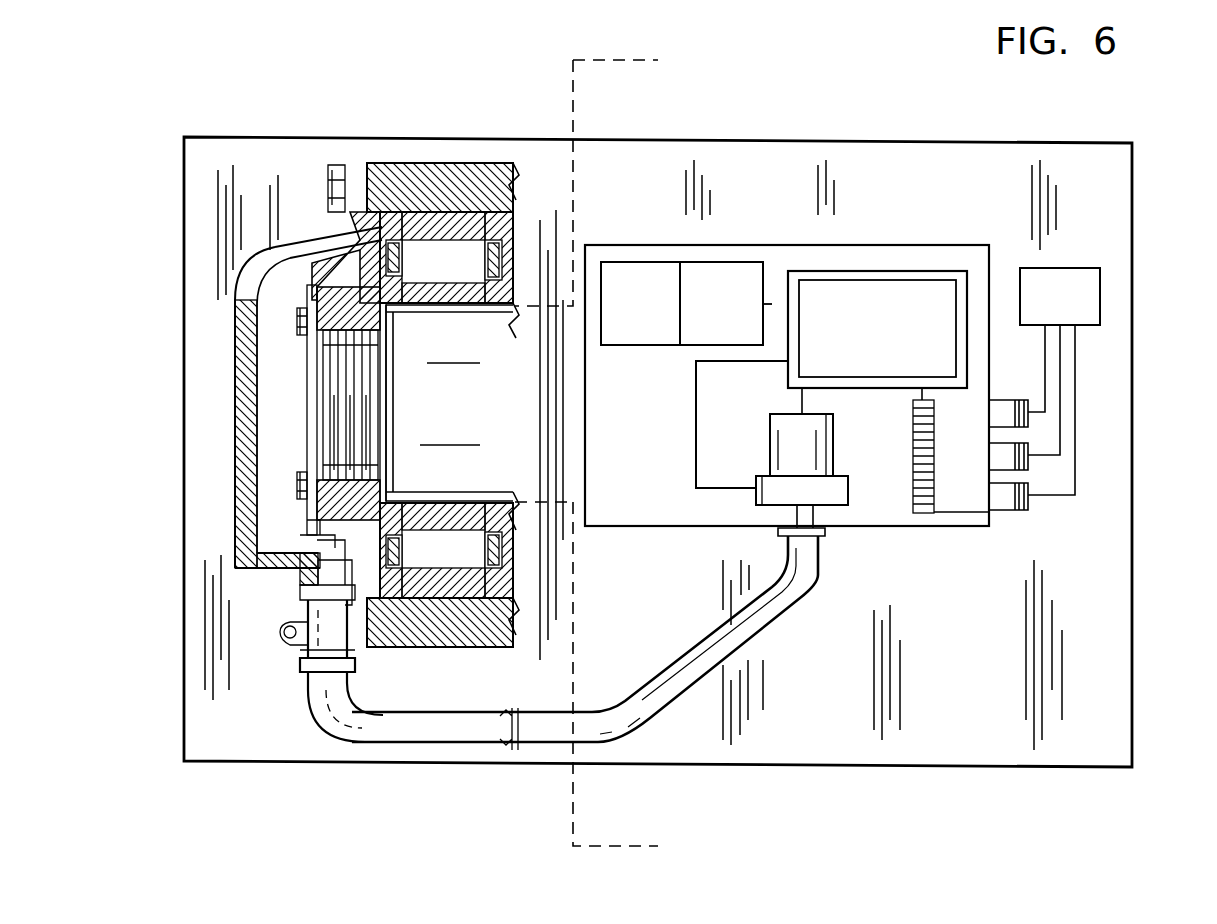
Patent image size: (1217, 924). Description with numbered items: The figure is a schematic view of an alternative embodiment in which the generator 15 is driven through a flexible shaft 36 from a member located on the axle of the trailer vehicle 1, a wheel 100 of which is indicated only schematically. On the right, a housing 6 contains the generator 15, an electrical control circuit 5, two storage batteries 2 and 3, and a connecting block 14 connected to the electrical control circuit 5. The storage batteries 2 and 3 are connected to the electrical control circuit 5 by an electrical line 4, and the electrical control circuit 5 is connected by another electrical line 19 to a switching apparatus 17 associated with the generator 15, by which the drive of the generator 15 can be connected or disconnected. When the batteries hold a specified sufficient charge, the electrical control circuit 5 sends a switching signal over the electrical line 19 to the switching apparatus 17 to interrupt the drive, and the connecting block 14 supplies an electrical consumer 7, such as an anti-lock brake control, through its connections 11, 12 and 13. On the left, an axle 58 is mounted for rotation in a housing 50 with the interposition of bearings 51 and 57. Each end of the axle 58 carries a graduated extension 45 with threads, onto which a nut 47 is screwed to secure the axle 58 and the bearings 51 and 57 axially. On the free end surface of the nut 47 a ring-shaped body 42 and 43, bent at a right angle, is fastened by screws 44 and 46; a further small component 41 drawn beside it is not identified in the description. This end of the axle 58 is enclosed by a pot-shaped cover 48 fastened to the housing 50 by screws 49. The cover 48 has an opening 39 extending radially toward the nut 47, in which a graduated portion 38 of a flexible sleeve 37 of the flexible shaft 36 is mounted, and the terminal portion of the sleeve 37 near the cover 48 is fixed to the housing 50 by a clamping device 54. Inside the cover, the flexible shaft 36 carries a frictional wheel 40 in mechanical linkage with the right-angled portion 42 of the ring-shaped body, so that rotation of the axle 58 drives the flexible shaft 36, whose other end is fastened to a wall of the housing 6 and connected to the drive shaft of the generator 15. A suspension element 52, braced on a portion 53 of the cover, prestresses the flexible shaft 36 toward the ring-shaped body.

The wheel 100 is at (643, 39).
The trailer vehicle 1 is at (617, 160).
The storage battery 2 is at (645, 268).
The storage battery 3 is at (717, 275).
The electrical line 4 is at (772, 304).
The electrical control circuit 5 is at (820, 290).
The housing 6 is at (890, 247).
The electrical consumer 7 is at (1092, 278).
The connection 11 is at (1000, 412).
The connection 12 is at (1000, 455).
The connection 13 is at (1000, 495).
The connecting block 14 is at (990, 512).
The generator 15 is at (818, 442).
The switching apparatus 17 is at (762, 505).
The electrical line 19 is at (697, 437).
The flexible shaft 36 is at (825, 532).
The flexible sleeve 37 is at (785, 600).
The graduated portion 38 is at (325, 598).
The opening 39 is at (348, 582).
The frictional wheel 40 is at (290, 566).
The gasket 41 is at (336, 547).
The right-angled portion of ring-shaped body 42 is at (310, 532).
The ring-shaped body 43 is at (298, 522).
The screw 44 is at (297, 478).
The graduated extension 45 is at (325, 355).
The screw 46 is at (297, 318).
The nut 47 is at (328, 262).
The pot-shaped cover 48 is at (352, 300).
The screw 49 is at (338, 165).
The housing 50 is at (420, 640).
The bearing 51 is at (478, 610).
The suspension element 52 is at (305, 625).
The portion of cover 53 is at (350, 612).
The clamping device 54 is at (292, 645).
The bearing 57 is at (443, 248).
The axle 58 is at (465, 327).